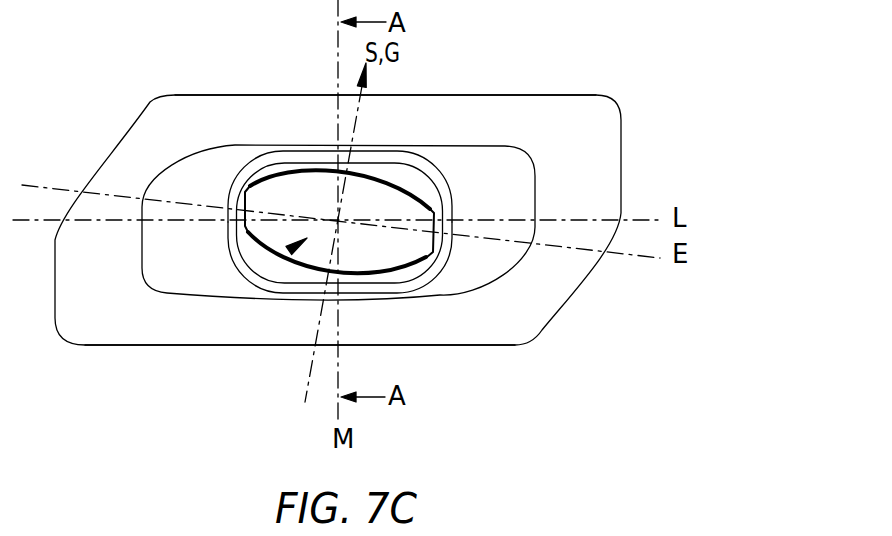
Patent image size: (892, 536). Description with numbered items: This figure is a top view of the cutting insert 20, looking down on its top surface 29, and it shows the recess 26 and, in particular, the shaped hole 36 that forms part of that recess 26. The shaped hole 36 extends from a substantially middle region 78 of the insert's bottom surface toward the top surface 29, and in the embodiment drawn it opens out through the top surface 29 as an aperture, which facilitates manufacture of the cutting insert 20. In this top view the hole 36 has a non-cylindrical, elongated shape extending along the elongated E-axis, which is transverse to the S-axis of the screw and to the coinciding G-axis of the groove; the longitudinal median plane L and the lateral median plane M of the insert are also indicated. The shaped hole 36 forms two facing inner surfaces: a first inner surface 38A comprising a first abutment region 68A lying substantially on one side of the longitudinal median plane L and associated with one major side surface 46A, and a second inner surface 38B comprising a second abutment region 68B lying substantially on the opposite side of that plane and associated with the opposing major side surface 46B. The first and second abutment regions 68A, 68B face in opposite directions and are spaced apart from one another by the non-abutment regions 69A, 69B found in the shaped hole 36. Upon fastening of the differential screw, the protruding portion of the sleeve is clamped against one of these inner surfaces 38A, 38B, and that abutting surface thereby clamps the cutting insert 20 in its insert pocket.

The cutting insert 20 is at (597, 58).
The top surface 29 is at (572, 145).
The shaped hole 36 is at (326, 221).
The recess 26 is at (326, 221).
The first inner surface 38A is at (406, 170).
The second inner surface 38B is at (283, 276).
The major side surface 46A is at (522, 95).
The opposing major side surface 46B is at (465, 345).
The first abutment region 68A is at (412, 188).
The second abutment region 68B is at (313, 270).
The non-abutment region 69A is at (438, 241).
The non-abutment region 69B is at (238, 191).
The middle region 78 is at (290, 250).